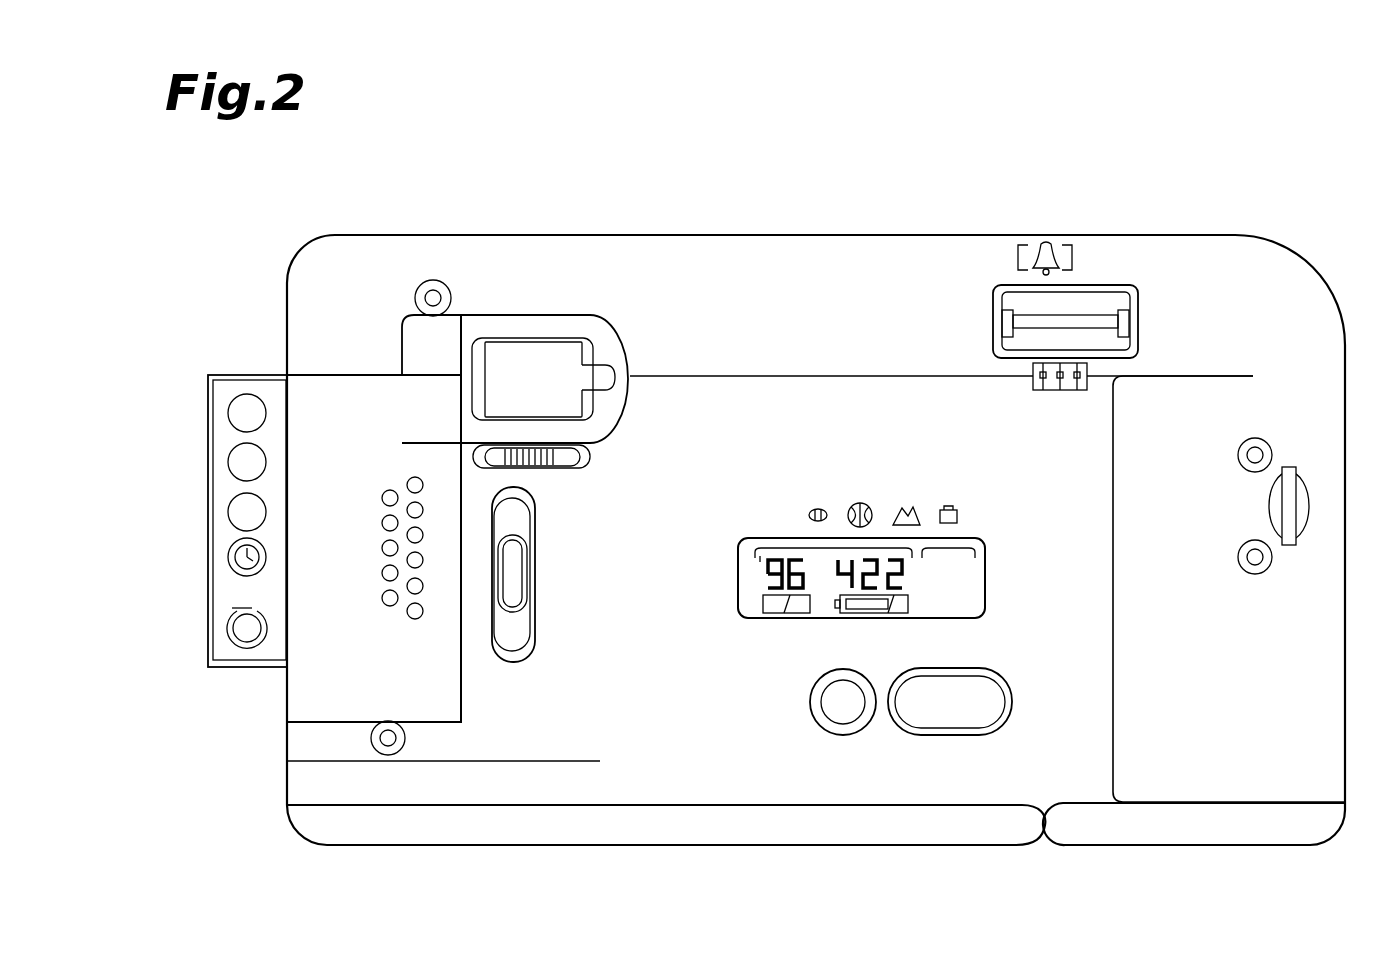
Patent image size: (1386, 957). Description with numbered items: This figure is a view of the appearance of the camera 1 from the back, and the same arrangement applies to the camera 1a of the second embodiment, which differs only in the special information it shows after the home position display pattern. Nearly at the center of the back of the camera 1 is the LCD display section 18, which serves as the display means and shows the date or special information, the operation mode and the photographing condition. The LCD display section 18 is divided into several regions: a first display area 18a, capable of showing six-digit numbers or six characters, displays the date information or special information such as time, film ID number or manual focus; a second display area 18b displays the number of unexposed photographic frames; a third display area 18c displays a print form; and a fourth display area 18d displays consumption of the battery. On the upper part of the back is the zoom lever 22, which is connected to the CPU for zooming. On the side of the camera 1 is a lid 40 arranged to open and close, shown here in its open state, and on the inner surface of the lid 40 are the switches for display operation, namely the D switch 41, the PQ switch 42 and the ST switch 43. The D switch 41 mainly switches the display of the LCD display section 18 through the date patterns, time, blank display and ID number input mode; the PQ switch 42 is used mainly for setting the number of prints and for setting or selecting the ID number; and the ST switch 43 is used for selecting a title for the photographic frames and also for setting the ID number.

The camera 1 is at (816, 480).
The camera 1a is at (816, 540).
The LCD display section 18 is at (881, 572).
The first display area 18a is at (832, 546).
The second display area 18b is at (948, 547).
The third display area 18c is at (768, 617).
The fourth display area 18d is at (843, 620).
The zoom lever 22 is at (1103, 300).
The lid 40 is at (221, 545).
The D switch 41 is at (228, 412).
The PQ switch 42 is at (228, 462).
The ST switch 43 is at (228, 510).